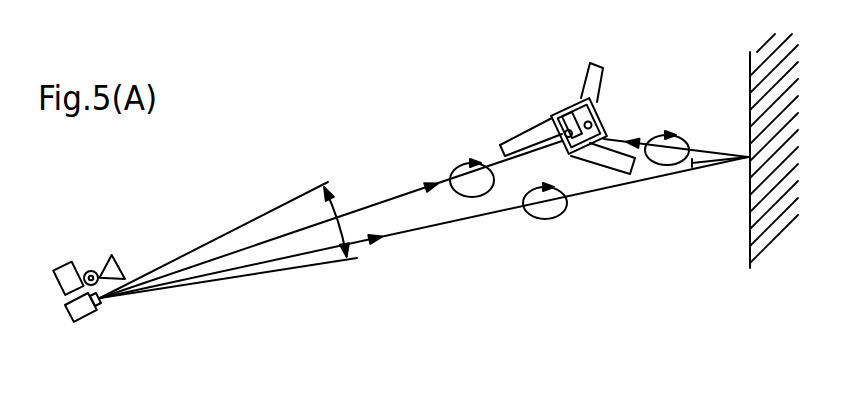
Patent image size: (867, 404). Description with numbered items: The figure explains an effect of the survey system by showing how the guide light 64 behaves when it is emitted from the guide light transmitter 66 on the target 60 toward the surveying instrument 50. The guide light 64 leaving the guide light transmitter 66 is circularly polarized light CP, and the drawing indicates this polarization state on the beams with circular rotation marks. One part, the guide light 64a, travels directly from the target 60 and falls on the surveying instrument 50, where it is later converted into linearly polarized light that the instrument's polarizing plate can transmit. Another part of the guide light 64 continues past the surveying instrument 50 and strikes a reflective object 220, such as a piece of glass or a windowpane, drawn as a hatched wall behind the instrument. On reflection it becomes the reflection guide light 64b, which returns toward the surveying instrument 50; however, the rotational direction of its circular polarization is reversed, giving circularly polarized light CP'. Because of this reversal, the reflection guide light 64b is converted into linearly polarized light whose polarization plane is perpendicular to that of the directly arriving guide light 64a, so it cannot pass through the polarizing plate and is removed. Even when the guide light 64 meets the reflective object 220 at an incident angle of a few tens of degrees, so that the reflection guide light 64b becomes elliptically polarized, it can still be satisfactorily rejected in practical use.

The surveying instrument 50 is at (552, 113).
The target 60 is at (75, 268).
The guide light 64 is at (265, 214).
The guide light 64a is at (402, 196).
The reflection guide light 64b is at (733, 158).
The guide light transmitter 66 is at (82, 323).
The reflective object 220 is at (748, 229).
The circularly polarized light CP is at (506, 194).
The circularly polarized light CP' is at (667, 122).